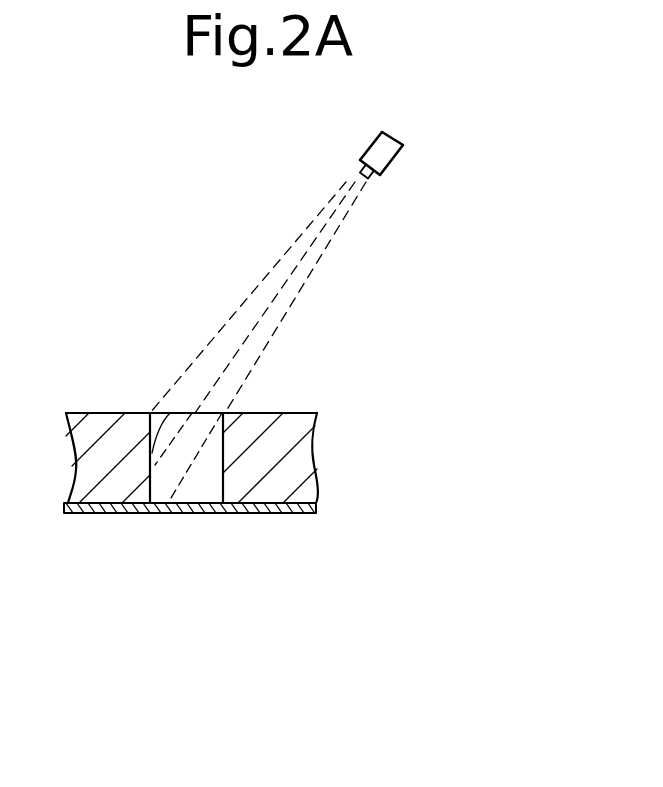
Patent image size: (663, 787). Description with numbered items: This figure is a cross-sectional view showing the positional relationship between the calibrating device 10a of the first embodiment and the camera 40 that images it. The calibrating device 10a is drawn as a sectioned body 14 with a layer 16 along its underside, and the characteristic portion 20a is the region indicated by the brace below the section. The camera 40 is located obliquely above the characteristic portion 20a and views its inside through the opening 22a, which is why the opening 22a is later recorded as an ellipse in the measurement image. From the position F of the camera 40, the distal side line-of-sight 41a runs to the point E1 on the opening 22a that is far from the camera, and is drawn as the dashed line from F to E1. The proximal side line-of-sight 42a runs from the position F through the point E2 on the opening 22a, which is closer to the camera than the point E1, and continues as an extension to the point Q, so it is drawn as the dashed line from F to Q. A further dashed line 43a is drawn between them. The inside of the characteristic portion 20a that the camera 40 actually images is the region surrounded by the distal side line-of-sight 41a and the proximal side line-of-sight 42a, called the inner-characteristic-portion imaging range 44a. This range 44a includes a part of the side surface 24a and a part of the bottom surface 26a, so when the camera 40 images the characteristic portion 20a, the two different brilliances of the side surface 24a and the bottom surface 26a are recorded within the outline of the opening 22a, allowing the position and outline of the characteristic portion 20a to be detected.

The calibrating device 10a is at (352, 416).
The transparent body 14 is at (317, 452).
The reflective layer 16 is at (317, 508).
The characteristic portion 20a is at (303, 597).
The opening 22a is at (150, 454).
The side surface 24a is at (150, 480).
The bottom surface 26a is at (198, 504).
The camera 40 is at (394, 158).
The distal side line-of-sight 41a is at (235, 318).
The proximal side line-of-sight 42a is at (272, 334).
The third light ray 43a is at (289, 273).
The inner-characteristic-portion imaging range 44a is at (207, 368).
The position of the camera F is at (391, 192).
The point on the opening far from the camera E1 is at (150, 413).
The point on the opening closer to the camera E2 is at (225, 413).
The end point of the proximal line-of-sight extension Q is at (168, 503).